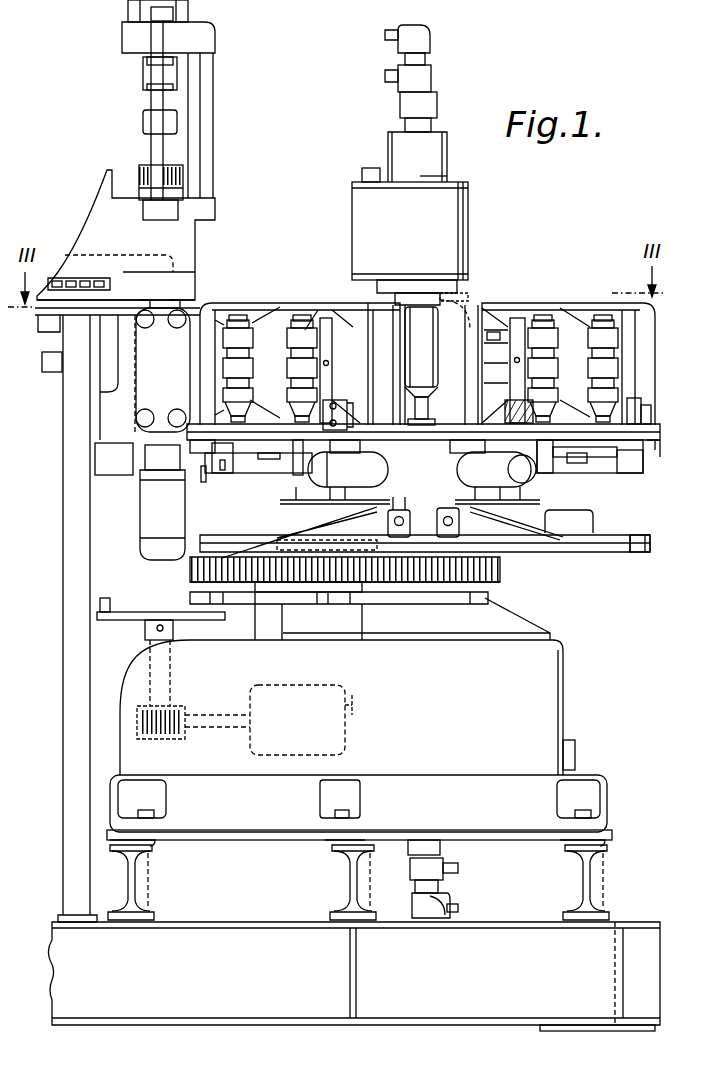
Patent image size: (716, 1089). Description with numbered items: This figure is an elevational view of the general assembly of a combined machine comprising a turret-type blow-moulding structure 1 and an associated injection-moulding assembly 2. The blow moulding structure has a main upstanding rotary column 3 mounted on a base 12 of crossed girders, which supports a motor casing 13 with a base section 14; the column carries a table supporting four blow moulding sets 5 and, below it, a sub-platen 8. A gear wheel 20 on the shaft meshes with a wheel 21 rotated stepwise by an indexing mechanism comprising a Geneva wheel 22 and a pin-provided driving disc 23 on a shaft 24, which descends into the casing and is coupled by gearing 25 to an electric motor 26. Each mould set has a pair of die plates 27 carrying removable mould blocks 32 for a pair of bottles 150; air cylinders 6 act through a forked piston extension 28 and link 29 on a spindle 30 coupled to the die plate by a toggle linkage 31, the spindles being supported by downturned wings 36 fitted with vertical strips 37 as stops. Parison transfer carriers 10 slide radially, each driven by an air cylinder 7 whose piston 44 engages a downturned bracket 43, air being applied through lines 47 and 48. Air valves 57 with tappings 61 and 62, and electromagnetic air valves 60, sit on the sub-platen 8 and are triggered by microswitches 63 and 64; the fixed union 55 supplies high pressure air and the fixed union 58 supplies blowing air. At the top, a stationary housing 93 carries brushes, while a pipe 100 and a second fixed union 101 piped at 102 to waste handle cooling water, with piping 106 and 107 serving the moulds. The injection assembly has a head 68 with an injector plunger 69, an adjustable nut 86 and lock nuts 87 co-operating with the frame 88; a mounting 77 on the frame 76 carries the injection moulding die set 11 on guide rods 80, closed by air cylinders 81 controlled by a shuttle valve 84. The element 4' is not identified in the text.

The blow-moulding structure 1 is at (508, 580).
The injection-moulding assembly 2 is at (196, 261).
The main upstanding rotary column 3 is at (480, 598).
The carrier plate 4' is at (434, 437).
The blow moulding set 5 is at (518, 312).
The air cylinder 6 is at (500, 470).
The air cylinder 7 is at (222, 470).
The sub-platen 8 is at (643, 553).
The parison transfer carrier 10 is at (433, 416).
The injection moulding die set 11 is at (203, 372).
The base 12 is at (597, 937).
The motor casing 13 is at (543, 698).
The base section 14 is at (485, 783).
The gear wheel 20 is at (503, 568).
The wheel 21 is at (197, 585).
The Geneva wheel 22 is at (256, 622).
The driving disc 23 is at (112, 610).
The shaft 24 is at (172, 668).
The gearing 25 is at (182, 708).
The electric motor 26 is at (355, 712).
The die plate 27 is at (212, 312).
The forked extension of the piston 28 is at (283, 473).
The link 29 is at (252, 473).
The spindle 30 is at (250, 318).
The toggle linkage 31 is at (297, 350).
The mould block 32 is at (373, 310).
The downturned wing 36 is at (297, 318).
The vertical strip 37 is at (324, 318).
The downturned bracket 43 is at (435, 465).
The piston 44 is at (205, 482).
The air line 47 is at (345, 612).
The air line 48 is at (232, 500).
The fixed union 55 is at (417, 902).
The air valve 57 is at (400, 543).
The fixed union 58 is at (412, 872).
The electromagnetic air valve 60 is at (222, 557).
The tapping 61 is at (388, 523).
The tapping 62 is at (435, 522).
The microswitch 63 is at (345, 393).
The microswitch 64 is at (355, 416).
The head 68 is at (173, 238).
The injector plunger 69 is at (151, 152).
The frame 76 is at (70, 474).
The mounting 77 is at (103, 366).
The guide rod 80 is at (174, 408).
The air cylinder 81 is at (147, 527).
The solenoid-operated shuttle valve 84 is at (118, 460).
The adjustable nut 86 is at (143, 123).
The lock nut 87 is at (143, 78).
The frame 88 is at (132, 38).
The stationary housing 93 is at (445, 221).
The pipe 100 is at (387, 30).
The second fixed union 101 is at (422, 76).
The waste pipe 102 is at (385, 77).
The piping 106 is at (462, 308).
The piping 107 is at (468, 296).
The bottle 150 is at (407, 315).